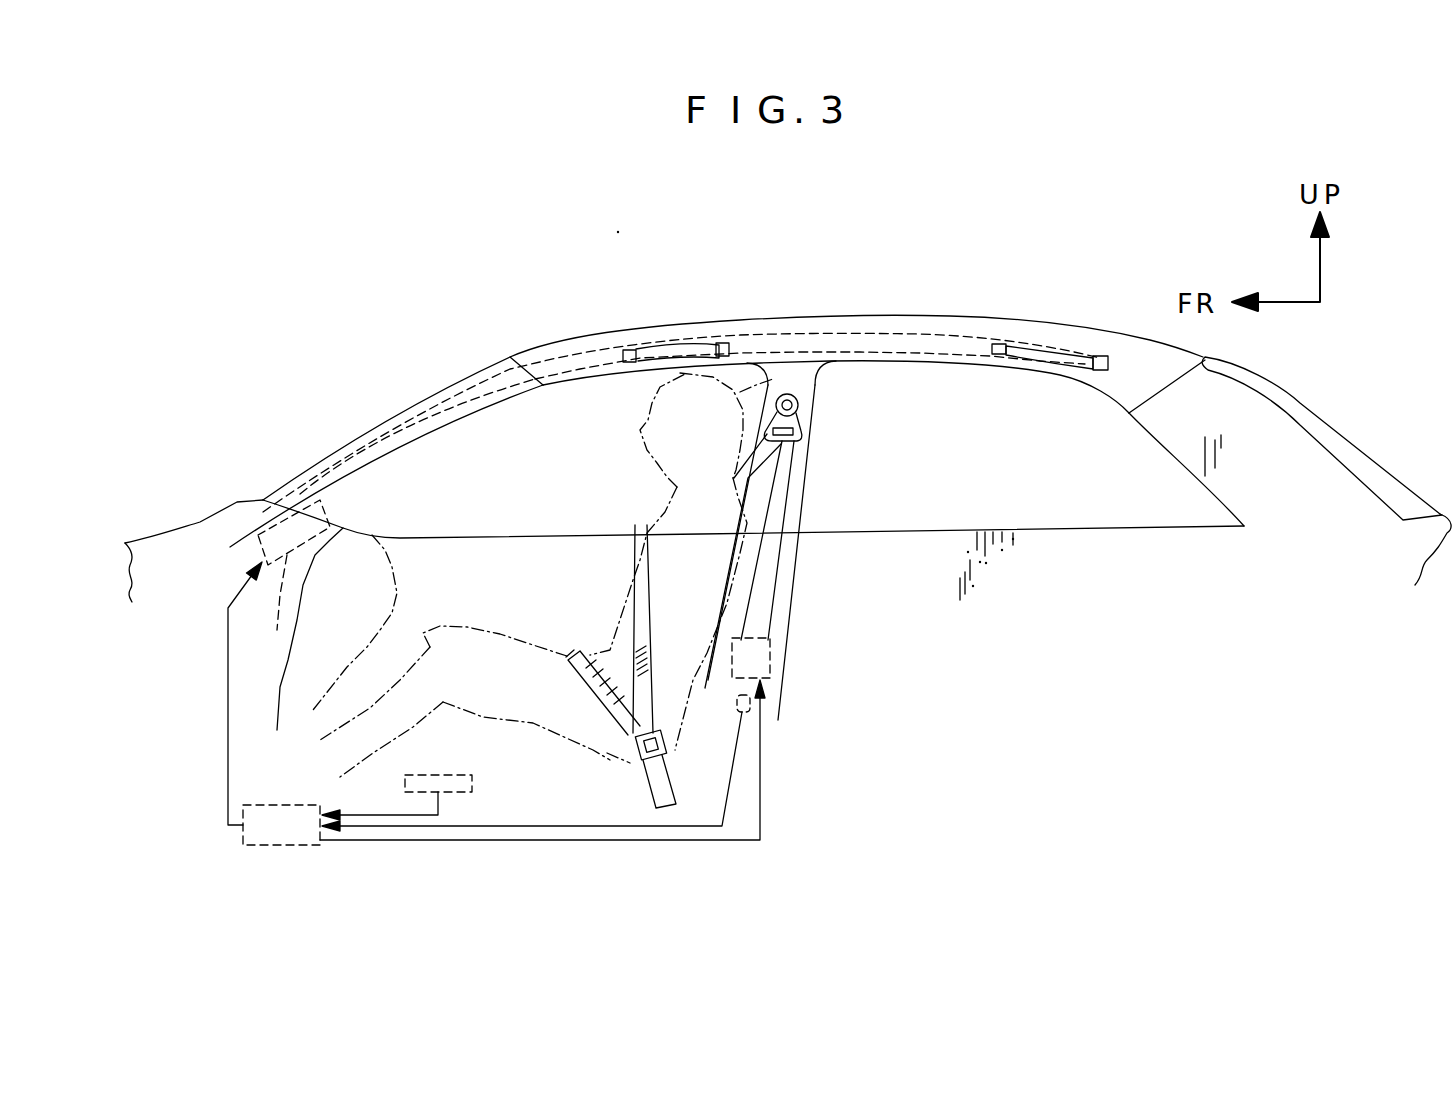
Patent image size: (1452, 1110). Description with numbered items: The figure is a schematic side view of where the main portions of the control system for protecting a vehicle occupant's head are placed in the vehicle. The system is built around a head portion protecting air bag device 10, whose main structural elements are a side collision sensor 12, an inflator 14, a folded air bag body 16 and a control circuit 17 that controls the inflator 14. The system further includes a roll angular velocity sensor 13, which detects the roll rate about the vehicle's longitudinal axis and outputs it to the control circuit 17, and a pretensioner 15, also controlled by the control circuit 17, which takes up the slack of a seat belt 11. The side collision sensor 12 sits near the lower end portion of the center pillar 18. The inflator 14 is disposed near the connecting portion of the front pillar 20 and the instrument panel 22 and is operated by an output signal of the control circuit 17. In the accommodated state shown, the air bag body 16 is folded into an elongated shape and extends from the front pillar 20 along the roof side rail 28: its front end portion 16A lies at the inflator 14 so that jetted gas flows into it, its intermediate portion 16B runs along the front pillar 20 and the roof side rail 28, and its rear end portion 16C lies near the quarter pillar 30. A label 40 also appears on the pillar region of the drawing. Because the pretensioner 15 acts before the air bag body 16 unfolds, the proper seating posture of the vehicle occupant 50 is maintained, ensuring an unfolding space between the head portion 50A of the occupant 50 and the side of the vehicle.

The head portion protecting air bag device 10 is at (907, 325).
The seat belt 11 is at (786, 514).
The side collision sensor 12 is at (750, 707).
The roll angular velocity sensor 13 is at (428, 773).
The inflator 14 is at (279, 662).
The pretensioner 15 is at (773, 663).
The air bag body 16 is at (575, 345).
The front end portion 16A is at (341, 494).
The intermediate portion 16B is at (950, 340).
The rear end portion 16C is at (1046, 347).
The control circuit 17 is at (267, 845).
The center pillar 18 is at (812, 475).
The front pillar 20 is at (455, 447).
The instrument panel 22 is at (403, 568).
The roof side rail 28 is at (840, 325).
The quarter pillar 30 is at (1160, 452).
The front pillar garnish 40 is at (416, 425).
The vehicle occupant 50 is at (653, 498).
The head portion 50A is at (773, 379).